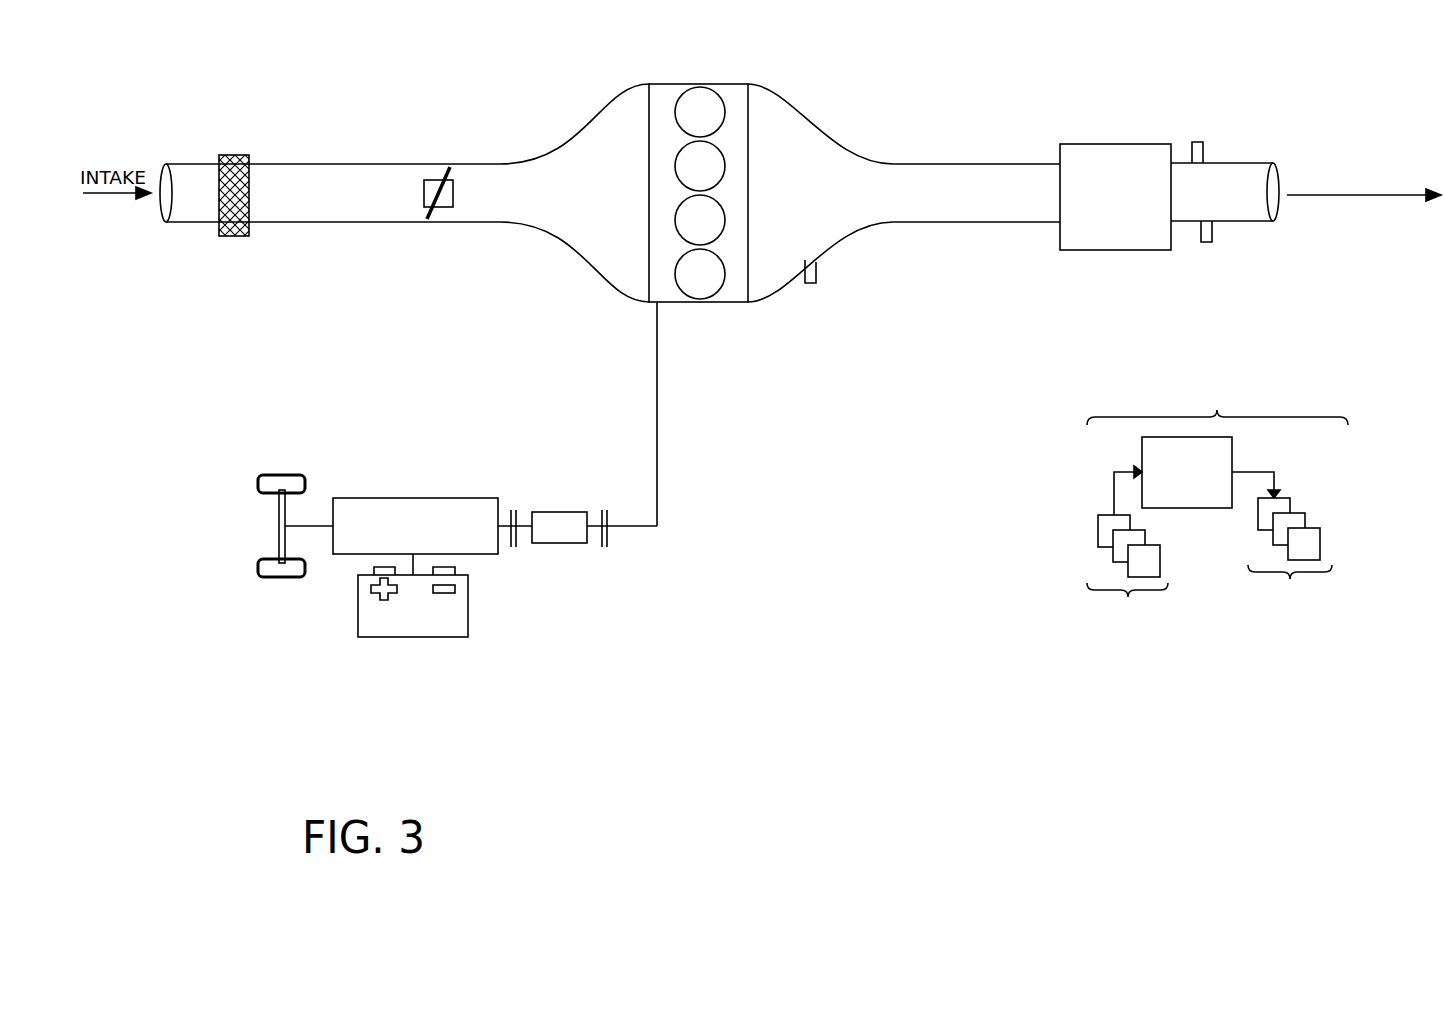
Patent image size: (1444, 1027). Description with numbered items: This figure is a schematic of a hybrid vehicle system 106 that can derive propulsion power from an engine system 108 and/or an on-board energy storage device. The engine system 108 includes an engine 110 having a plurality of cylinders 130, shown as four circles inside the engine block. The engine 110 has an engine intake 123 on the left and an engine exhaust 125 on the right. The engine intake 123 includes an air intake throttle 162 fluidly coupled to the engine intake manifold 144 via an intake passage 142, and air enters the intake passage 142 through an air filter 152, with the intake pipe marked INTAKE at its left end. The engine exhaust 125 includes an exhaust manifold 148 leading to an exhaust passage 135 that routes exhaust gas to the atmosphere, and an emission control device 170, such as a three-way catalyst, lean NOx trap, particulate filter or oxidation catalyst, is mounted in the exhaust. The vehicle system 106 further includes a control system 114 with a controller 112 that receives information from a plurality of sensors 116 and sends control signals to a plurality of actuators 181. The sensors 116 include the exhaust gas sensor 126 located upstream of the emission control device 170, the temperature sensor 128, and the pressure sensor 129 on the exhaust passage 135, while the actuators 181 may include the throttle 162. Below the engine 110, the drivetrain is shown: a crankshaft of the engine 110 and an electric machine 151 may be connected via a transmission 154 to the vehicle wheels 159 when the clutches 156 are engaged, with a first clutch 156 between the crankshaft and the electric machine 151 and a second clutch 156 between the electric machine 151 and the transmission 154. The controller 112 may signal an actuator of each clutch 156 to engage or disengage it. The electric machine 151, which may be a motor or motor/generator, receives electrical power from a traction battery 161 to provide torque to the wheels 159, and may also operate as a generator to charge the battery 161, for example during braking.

The hybrid vehicle system 106 is at (183, 58).
The engine system 108 is at (1304, 48).
The engine 110 is at (748, 173).
The controller 112 is at (1187, 472).
The control system 114 is at (1217, 500).
The sensors 116 is at (1127, 552).
The engine intake 123 is at (572, 110).
The engine exhaust 125 is at (862, 112).
The exhaust gas sensor 126 is at (816, 262).
The temperature sensor 128 is at (1207, 242).
The pressure sensor 129 is at (1198, 142).
The cylinders 130 is at (722, 104).
The exhaust passage 135 is at (1250, 163).
The intake passage 142 is at (197, 223).
The engine intake manifold 144 is at (621, 204).
The exhaust manifold 148 is at (843, 204).
The electric machine 151 is at (560, 544).
The air filter 152 is at (236, 155).
The transmission 154 is at (357, 555).
The clutches 156 is at (516, 515).
The vehicle wheels 159 is at (280, 578).
The traction battery 161 is at (418, 638).
The air intake throttle 162 is at (453, 206).
The emission control device 170 is at (1100, 144).
The actuators 181 is at (1282, 546).